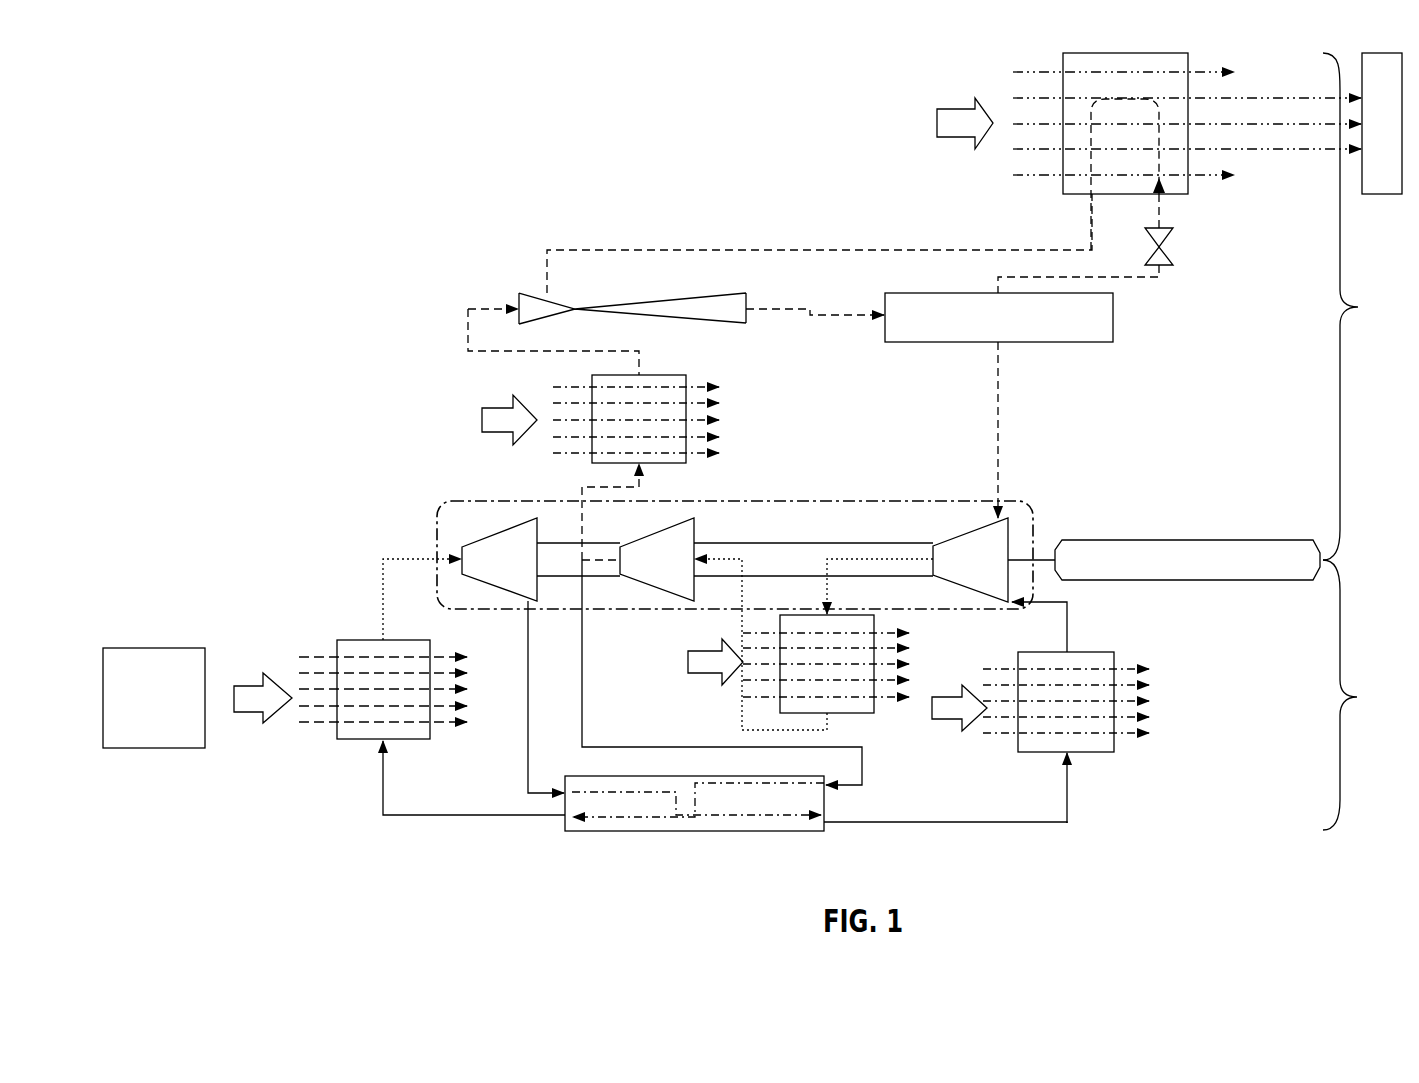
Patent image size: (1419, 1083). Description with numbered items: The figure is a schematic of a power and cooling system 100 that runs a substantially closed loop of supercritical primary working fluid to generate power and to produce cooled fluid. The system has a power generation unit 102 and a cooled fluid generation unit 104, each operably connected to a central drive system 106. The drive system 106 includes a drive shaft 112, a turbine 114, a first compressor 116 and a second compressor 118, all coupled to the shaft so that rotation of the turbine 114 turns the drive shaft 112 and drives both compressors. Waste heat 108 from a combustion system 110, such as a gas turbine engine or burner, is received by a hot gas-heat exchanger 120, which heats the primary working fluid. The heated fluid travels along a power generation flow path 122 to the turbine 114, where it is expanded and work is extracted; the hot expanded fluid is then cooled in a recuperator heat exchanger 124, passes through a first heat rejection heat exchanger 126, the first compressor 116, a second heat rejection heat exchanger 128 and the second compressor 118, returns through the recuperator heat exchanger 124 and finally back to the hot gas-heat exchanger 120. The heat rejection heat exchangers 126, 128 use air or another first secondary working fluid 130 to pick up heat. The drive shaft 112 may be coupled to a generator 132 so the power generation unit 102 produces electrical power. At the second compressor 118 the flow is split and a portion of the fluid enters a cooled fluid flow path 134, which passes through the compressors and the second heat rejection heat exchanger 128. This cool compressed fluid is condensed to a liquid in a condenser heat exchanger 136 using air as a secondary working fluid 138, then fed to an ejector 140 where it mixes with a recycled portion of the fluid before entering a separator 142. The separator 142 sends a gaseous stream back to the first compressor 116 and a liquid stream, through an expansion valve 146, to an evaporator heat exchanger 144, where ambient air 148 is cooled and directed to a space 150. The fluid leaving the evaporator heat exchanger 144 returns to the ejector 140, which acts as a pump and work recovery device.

The power and cooling system 100 is at (290, 103).
The power generation unit 102 is at (1363, 695).
The cooled fluid generation unit 104 is at (1363, 306).
The central drive system 106 is at (825, 500).
The waste heat 108 is at (255, 707).
The combustion system 110 is at (143, 647).
The drive shaft 112 is at (793, 550).
The turbine 114 is at (462, 547).
The first compressor 116 is at (977, 528).
The second compressor 118 is at (670, 583).
The hot gas-heat exchanger 120 is at (358, 639).
The power generation flow path 122 is at (383, 578).
The recuperator heat exchanger 124 is at (725, 832).
The first heat rejection heat exchanger 126 is at (1100, 745).
The second heat rejection heat exchanger 128 is at (866, 705).
The first secondary working fluid 130 is at (700, 670).
The generator 132 is at (1210, 580).
The cooled fluid flow path 134 is at (827, 248).
The condenser heat exchanger 136 is at (665, 458).
The secondary working fluid 138 is at (497, 430).
The ejector 140 is at (726, 322).
The separator 142 is at (1062, 332).
The evaporator heat exchanger 144 is at (1088, 53).
The expansion valve 146 is at (1173, 252).
The ambient air 148 is at (947, 123).
The space 150 is at (1382, 53).